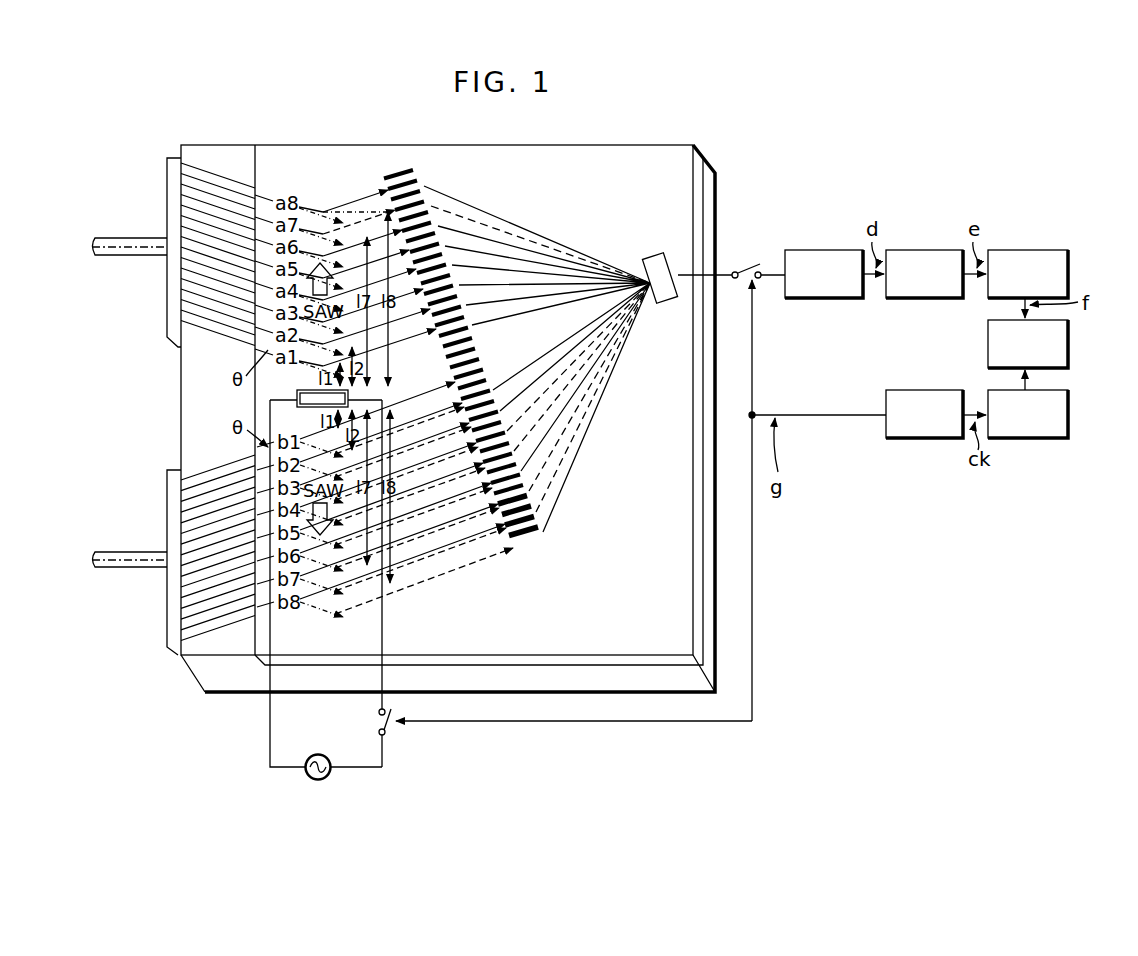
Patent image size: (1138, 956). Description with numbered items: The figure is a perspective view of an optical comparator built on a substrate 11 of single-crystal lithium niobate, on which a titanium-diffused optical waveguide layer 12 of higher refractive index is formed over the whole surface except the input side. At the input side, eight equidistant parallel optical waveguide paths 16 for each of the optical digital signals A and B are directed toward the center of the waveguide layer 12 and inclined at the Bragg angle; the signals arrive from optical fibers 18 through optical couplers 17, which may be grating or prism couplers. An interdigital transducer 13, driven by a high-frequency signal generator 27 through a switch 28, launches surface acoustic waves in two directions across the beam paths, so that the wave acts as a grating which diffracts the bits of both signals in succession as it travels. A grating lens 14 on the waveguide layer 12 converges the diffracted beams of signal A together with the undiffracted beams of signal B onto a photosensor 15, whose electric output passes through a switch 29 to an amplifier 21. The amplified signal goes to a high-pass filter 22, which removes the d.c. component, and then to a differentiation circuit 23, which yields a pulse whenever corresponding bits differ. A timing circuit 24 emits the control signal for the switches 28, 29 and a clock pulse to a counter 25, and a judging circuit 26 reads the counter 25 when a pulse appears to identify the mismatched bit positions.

The substrate 11 is at (708, 598).
The optical waveguide layer 12 is at (700, 575).
The interdigital transducer 13 is at (295, 393).
The grating lens 14 is at (477, 349).
The photosensor 15 is at (655, 256).
The optical waveguide paths 16 is at (227, 338).
The optical couplers 17 is at (170, 300).
The optical fibers 18 is at (125, 243).
The amplifier 21 is at (830, 249).
The high-pass filter 22 is at (930, 249).
The differentiation circuit 23 is at (1035, 249).
The timing circuit 24 is at (922, 440).
The counter 25 is at (1028, 440).
The judging circuit 26 is at (1070, 345).
The high-frequency signal generator 27 is at (331, 776).
The switch 28 is at (395, 730).
The switch 29 is at (754, 266).